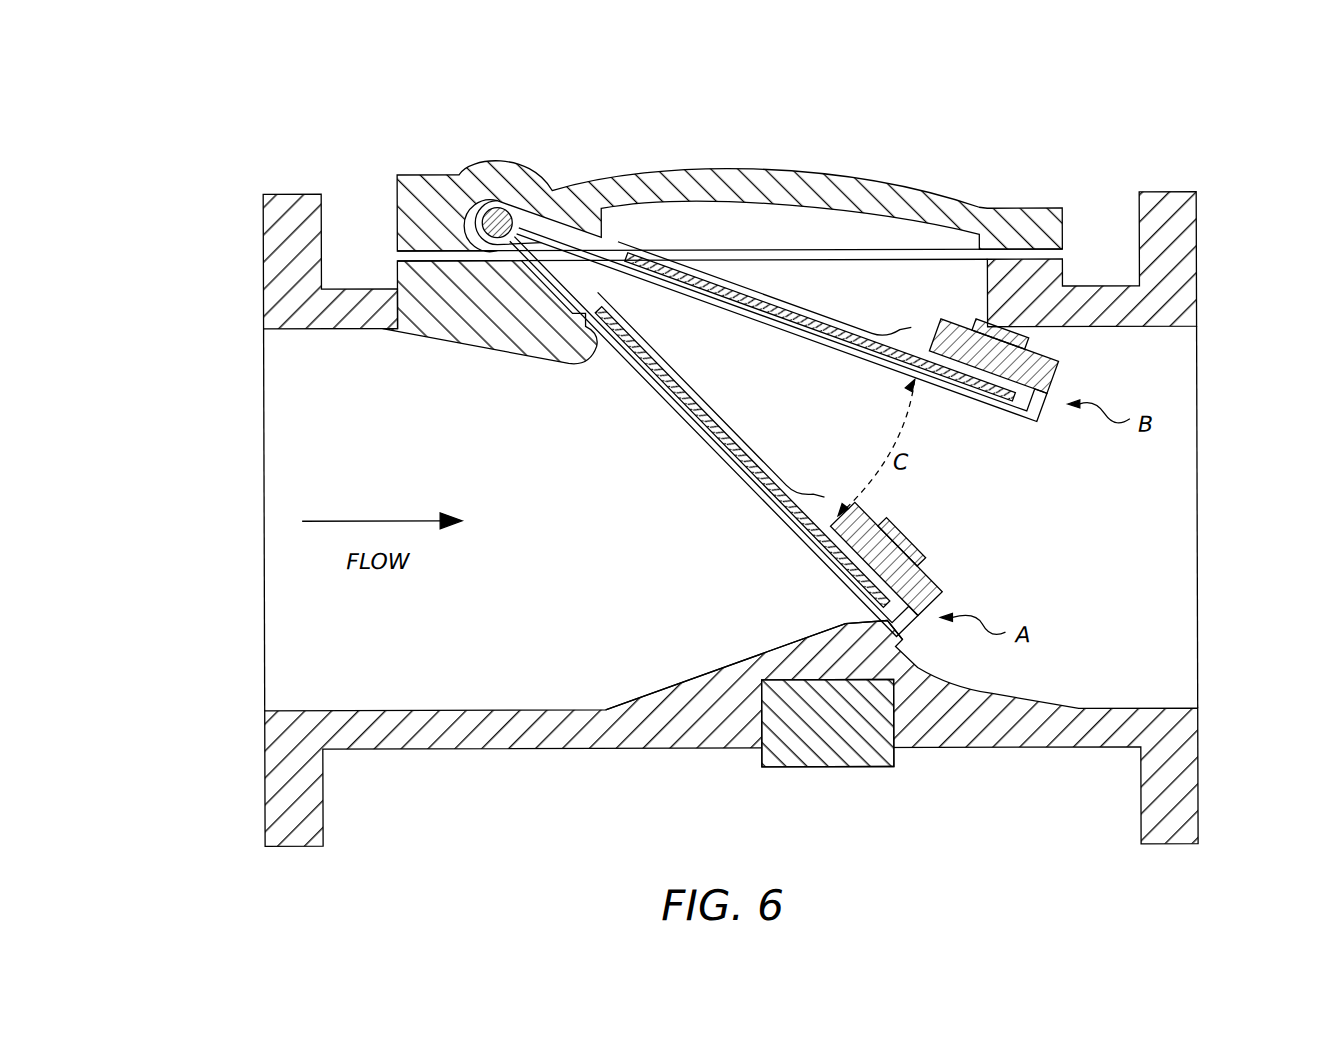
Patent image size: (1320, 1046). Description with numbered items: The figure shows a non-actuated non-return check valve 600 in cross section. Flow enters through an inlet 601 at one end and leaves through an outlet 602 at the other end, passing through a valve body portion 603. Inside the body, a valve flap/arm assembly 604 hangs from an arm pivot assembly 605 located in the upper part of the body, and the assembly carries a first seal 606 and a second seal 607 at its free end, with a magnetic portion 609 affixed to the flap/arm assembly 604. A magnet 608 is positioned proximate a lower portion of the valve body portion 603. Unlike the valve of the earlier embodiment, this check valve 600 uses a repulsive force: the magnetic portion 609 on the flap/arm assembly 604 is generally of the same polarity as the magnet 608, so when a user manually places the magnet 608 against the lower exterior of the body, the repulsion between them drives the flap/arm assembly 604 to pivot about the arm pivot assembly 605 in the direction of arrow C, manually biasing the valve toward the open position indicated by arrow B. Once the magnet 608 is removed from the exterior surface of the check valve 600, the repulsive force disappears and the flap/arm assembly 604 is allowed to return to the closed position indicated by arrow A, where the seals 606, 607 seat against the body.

The check valve 600 is at (935, 125).
The inlet 601 is at (332, 484).
The outlet 602 is at (1160, 485).
The valve body portion 603 is at (576, 765).
The valve flap/arm assembly 604 is at (742, 490).
The arm pivot assembly 605 is at (500, 207).
The first seal 606 is at (880, 623).
The second seal 607 is at (912, 530).
The magnet 608 is at (858, 752).
The magnetic portion 609 is at (946, 318).